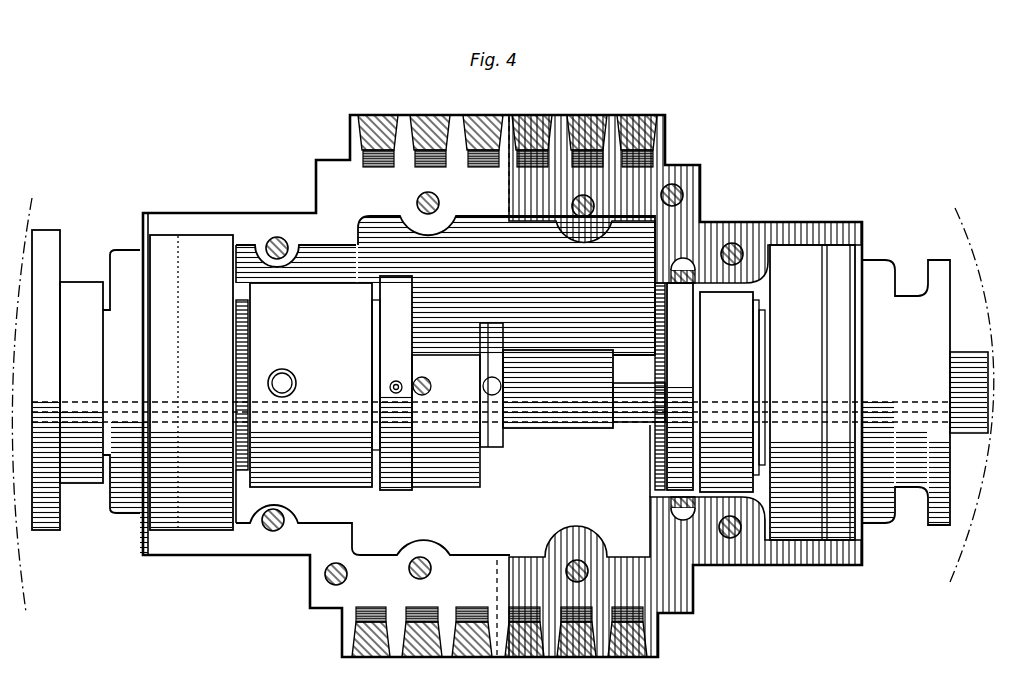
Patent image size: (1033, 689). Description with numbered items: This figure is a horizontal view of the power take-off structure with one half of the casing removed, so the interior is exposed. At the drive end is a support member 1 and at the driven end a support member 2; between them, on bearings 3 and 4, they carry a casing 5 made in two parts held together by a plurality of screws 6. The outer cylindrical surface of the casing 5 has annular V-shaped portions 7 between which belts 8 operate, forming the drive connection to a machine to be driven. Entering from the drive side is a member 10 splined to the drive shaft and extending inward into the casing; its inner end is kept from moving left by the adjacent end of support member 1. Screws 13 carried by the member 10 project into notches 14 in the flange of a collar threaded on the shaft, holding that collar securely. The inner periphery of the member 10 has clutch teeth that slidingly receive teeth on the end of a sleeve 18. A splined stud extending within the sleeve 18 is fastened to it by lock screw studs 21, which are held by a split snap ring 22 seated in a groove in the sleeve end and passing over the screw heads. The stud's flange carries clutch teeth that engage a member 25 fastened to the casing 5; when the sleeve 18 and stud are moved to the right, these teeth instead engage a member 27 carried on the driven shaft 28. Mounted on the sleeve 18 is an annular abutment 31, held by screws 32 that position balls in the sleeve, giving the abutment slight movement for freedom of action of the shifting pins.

The support member 1 is at (64, 228).
The support member 2 is at (948, 254).
The bearing 3 is at (184, 390).
The bearing 4 is at (822, 372).
The casing 5 is at (292, 232).
The screws 6 is at (270, 238).
The annular V-shaped portions 7 is at (352, 632).
The belts 8 is at (400, 112).
The member 10 is at (257, 336).
The screws 13 is at (300, 392).
The notches 14 is at (684, 388).
The sleeve 18 is at (438, 442).
The lock screw studs 21 is at (500, 398).
The split snap ring 22 is at (575, 425).
The member 25 is at (675, 372).
The member 27 is at (742, 348).
The driven shaft 28 is at (972, 356).
The annular abutment 31 is at (395, 305).
The screws 32 is at (394, 384).